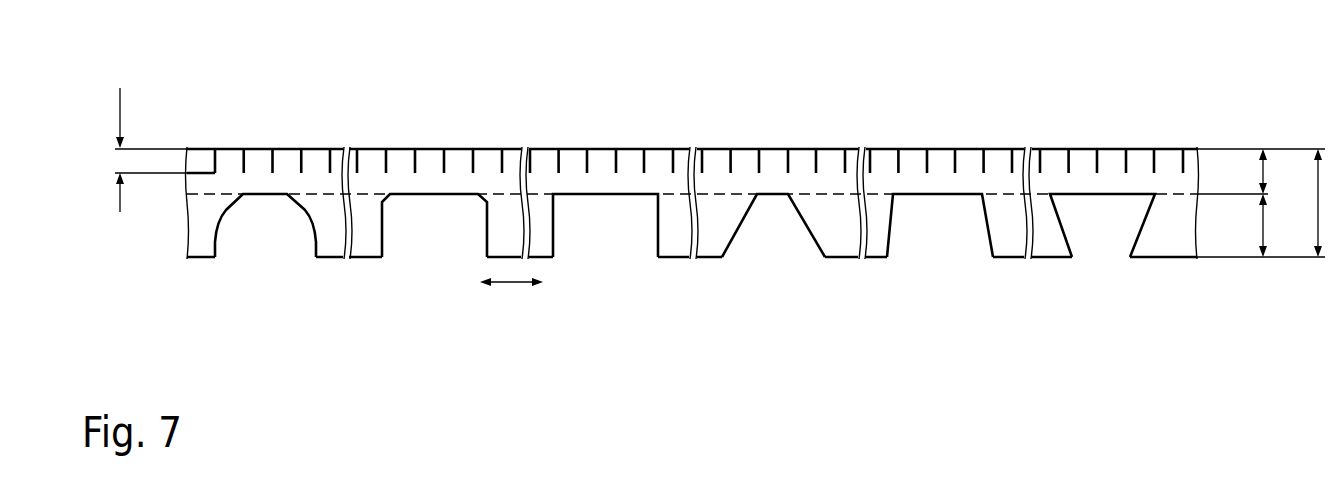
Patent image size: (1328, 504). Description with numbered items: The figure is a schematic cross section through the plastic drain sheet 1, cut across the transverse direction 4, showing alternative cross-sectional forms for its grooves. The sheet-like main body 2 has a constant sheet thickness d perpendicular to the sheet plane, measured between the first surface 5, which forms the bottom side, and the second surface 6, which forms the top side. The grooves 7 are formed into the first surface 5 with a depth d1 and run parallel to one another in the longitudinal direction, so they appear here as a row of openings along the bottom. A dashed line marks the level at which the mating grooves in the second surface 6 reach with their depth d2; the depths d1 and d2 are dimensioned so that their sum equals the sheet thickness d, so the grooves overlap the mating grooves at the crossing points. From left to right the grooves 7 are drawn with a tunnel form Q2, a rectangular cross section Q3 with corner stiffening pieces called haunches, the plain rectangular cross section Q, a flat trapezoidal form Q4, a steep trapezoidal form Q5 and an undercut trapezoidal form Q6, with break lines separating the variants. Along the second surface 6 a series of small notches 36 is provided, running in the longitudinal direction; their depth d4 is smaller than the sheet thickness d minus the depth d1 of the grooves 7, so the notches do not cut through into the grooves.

The plastic drain sheet 1 is at (544, 110).
The main body 2 is at (828, 173).
The transverse direction 4 is at (508, 284).
The first surface 5 is at (844, 270).
The second surface 6 is at (715, 138).
The grooves 7 is at (628, 232).
The notches 36 is at (273, 160).
The rectangular cross section Q is at (553, 225).
The tunnel form cross section Q2 is at (215, 245).
The rectangular cross section with corner stiffening pieces Q3 is at (382, 233).
The flat trapezoidal form cross section Q4 is at (805, 225).
The steep trapezoidal form cross section Q5 is at (892, 225).
The undercut trapezoidal form cross section Q6 is at (1072, 245).
The sheet thickness d is at (1310, 203).
The depth of the grooves d1 is at (1261, 225).
The depth of the mating grooves d2 is at (1261, 172).
The depth of the notches d4 is at (136, 150).